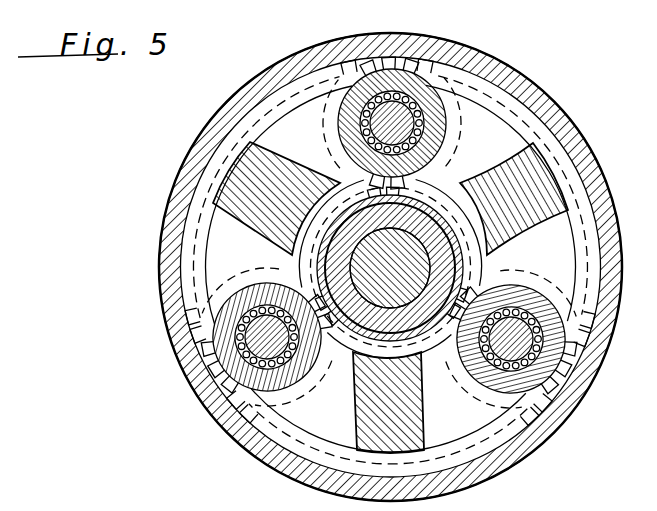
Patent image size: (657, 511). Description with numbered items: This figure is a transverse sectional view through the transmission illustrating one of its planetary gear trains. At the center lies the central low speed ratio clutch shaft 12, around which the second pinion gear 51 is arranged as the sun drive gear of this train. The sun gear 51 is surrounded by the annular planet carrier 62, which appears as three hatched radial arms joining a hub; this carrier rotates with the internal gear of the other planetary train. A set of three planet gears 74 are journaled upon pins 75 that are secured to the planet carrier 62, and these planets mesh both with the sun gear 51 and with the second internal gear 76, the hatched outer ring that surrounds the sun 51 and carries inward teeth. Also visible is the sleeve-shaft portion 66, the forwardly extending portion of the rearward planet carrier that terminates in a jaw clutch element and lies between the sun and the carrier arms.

The central low speed ratio clutch shaft 12 is at (385, 265).
The second pinion gear 51 is at (407, 197).
The annular planet carrier 62 is at (262, 145).
The sleeve-shaft portion 66 is at (426, 345).
The planet gears 74 is at (448, 140).
The pins 75 is at (386, 97).
The second internal gear 76 is at (351, 60).